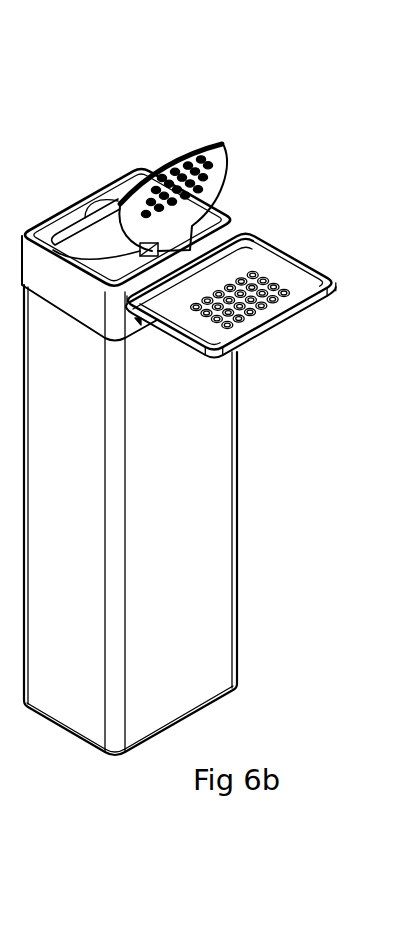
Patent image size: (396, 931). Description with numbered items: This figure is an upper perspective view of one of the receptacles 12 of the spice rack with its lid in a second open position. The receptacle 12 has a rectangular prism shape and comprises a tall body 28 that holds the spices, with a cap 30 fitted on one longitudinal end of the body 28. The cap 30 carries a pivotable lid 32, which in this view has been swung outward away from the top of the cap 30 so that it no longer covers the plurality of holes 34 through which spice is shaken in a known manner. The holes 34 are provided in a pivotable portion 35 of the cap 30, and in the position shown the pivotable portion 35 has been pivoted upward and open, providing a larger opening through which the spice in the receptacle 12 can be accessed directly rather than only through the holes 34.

The receptacle 12 is at (210, 453).
The body 28 is at (197, 638).
The cap 30 is at (213, 217).
The pivotable lid 32 is at (300, 282).
The holes 34 is at (220, 160).
The pivotable portion 35 is at (178, 166).